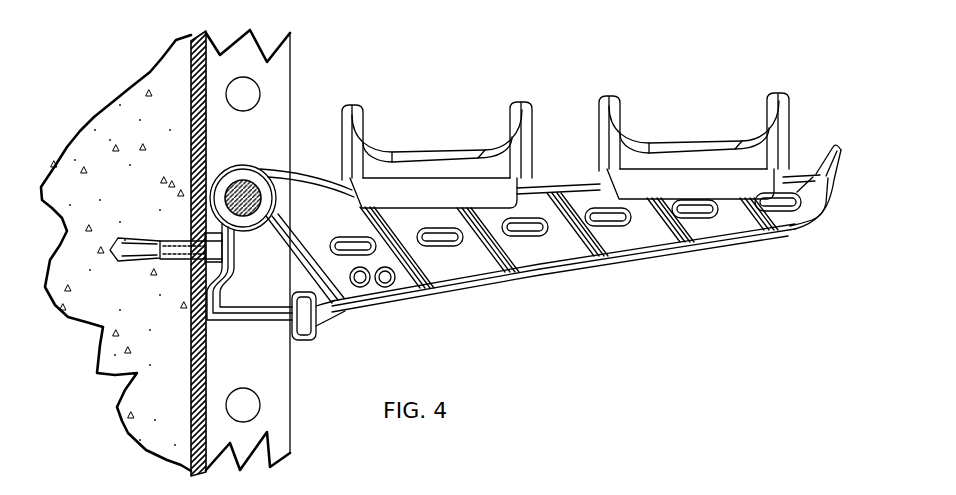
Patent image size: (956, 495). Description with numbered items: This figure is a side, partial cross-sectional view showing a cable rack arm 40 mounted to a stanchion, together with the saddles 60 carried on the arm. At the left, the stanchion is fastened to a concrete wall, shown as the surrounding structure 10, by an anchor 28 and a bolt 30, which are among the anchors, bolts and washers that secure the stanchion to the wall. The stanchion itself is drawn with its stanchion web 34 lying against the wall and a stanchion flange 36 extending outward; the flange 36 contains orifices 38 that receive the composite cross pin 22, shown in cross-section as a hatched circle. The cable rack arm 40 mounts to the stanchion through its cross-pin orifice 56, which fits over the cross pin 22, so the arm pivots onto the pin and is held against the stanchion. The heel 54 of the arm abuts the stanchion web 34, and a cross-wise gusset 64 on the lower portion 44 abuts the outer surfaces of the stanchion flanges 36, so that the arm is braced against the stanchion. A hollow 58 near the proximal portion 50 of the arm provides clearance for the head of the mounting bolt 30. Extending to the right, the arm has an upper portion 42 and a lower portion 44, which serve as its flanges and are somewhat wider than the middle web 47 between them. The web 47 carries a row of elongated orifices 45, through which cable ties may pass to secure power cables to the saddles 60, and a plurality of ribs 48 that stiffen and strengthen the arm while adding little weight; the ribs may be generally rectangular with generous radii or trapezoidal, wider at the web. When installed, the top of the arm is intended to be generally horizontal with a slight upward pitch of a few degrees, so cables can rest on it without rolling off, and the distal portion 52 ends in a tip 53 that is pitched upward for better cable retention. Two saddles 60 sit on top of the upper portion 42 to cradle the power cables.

The concrete structure 10 is at (175, 406).
The cross pin 22 is at (243, 182).
The anchor 28 is at (150, 262).
The bolt 30 is at (207, 224).
The stanchion web 34 is at (192, 130).
The stanchion flange 36 is at (264, 138).
The orifice 38 is at (260, 92).
The cable rack arm 40 is at (780, 237).
The upper portion 42 is at (571, 180).
The lower portion 44 is at (673, 247).
The elongated orifice 45 is at (548, 242).
The web 47 is at (610, 238).
The rib 48 is at (506, 268).
The proximal portion 50 is at (309, 135).
The distal portion 52 is at (847, 194).
The tip 53 is at (833, 146).
The heel 54 is at (213, 322).
The cross-pin orifice 56 is at (254, 188).
The hollow 58 is at (213, 232).
The saddle 60 is at (524, 104).
The cross-wise gusset 64 is at (313, 330).